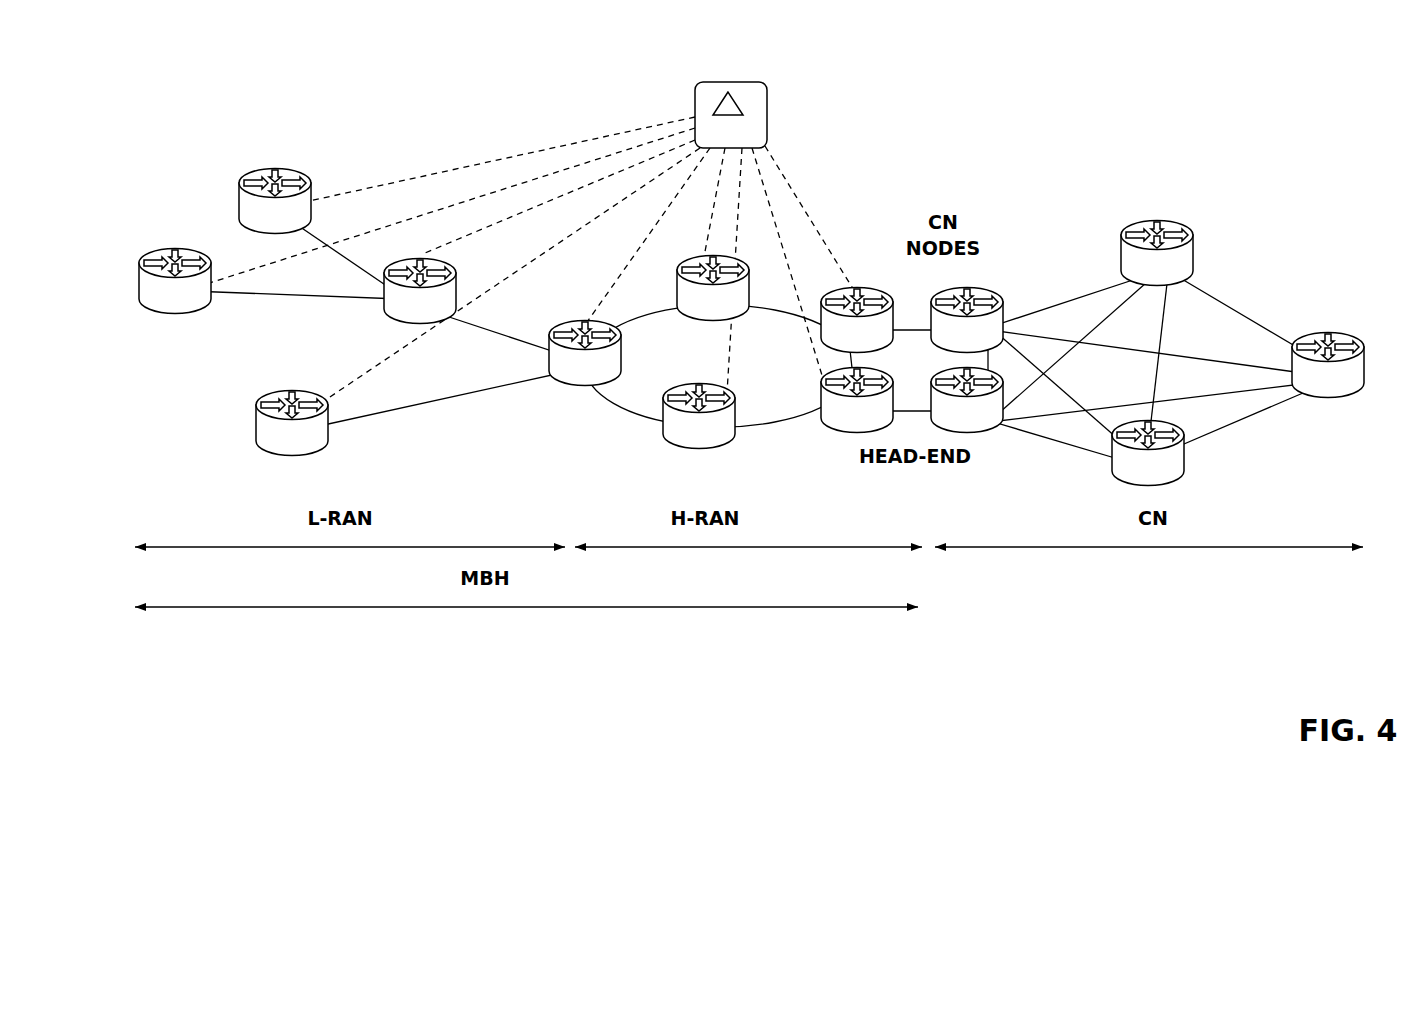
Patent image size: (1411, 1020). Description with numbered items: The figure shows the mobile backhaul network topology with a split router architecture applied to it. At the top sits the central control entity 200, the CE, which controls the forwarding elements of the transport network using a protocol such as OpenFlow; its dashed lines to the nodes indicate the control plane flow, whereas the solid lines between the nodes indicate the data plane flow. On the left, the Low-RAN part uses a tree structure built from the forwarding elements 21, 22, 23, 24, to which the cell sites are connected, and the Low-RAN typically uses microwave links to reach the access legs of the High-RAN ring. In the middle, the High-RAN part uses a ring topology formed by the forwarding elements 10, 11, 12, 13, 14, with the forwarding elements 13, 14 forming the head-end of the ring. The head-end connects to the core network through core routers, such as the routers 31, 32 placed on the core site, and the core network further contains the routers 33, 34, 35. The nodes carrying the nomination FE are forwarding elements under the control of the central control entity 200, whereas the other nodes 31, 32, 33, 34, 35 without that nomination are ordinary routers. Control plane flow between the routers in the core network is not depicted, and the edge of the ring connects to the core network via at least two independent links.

The central control entity 200 is at (755, 82).
The forwarding element 10 is at (748, 312).
The forwarding element 11 is at (562, 322).
The forwarding element 12 is at (670, 388).
The forwarding element 13 is at (823, 424).
The forwarding element 14 is at (883, 290).
The forwarding element 21 is at (322, 395).
The forwarding element 22 is at (386, 314).
The forwarding element 23 is at (302, 170).
The forwarding element 24 is at (200, 252).
The router 31 is at (994, 290).
The router 32 is at (994, 428).
The router 33 is at (1117, 478).
The router 34 is at (1357, 334).
The router 35 is at (1183, 224).